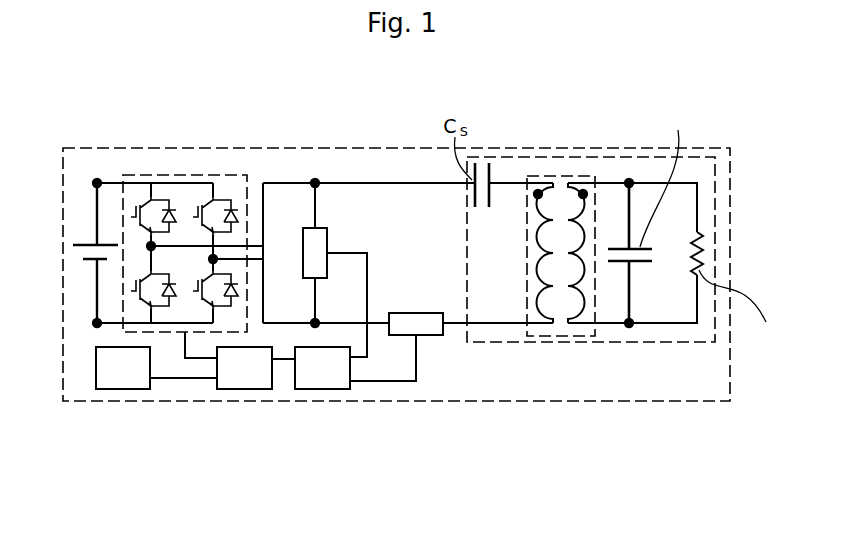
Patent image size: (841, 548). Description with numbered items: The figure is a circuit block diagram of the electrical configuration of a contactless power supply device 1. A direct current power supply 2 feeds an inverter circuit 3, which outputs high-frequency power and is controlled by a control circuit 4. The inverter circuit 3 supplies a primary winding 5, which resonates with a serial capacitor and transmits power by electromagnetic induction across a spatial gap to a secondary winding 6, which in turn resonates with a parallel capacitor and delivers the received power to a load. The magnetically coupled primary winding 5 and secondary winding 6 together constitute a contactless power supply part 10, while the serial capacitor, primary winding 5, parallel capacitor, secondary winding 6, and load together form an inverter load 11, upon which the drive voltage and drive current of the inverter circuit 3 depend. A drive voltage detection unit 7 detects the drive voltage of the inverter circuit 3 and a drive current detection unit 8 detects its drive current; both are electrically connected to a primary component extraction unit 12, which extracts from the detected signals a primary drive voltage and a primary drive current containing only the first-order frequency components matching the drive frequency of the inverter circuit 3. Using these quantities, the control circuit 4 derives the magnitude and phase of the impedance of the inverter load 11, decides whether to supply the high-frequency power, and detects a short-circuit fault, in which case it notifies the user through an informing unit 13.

The contactless power supply device 1 is at (497, 402).
The direct current power supply 2 is at (80, 241).
The inverter circuit 3 is at (187, 175).
The control circuit 4 is at (235, 390).
The primary winding 5 is at (553, 180).
The secondary winding 6 is at (568, 180).
The drive voltage detection unit 7 is at (328, 237).
The drive current detection unit 8 is at (428, 335).
The contactless power supply part 10 is at (561, 263).
The inverter load 11 is at (665, 342).
The primary component extraction unit 12 is at (318, 390).
The informing unit 13 is at (108, 385).